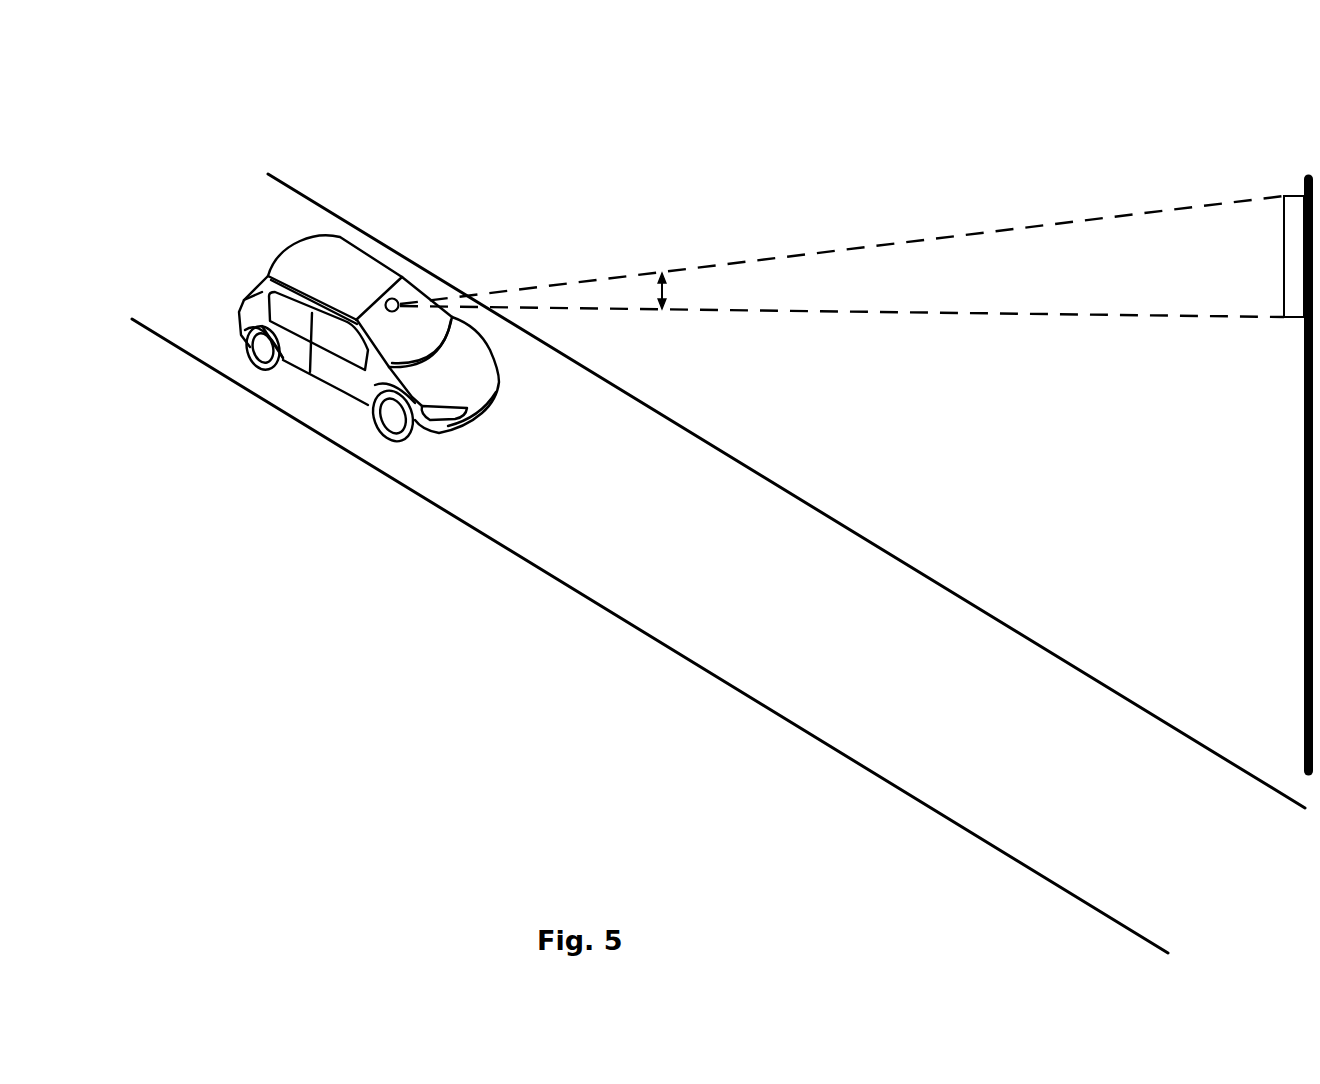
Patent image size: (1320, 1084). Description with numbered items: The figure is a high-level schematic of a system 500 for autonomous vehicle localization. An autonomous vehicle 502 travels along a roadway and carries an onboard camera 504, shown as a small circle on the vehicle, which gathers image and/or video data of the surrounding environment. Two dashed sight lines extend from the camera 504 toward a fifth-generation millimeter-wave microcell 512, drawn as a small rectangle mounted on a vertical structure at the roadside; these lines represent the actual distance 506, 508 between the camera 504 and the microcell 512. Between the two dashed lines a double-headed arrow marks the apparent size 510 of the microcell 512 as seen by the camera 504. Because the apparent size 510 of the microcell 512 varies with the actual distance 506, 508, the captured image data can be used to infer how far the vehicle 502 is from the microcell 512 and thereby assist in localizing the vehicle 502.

The system for autonomous vehicle localization 500 is at (136, 100).
The autonomous vehicle 502 is at (471, 386).
The onboard camera 504 is at (385, 301).
The actual distance 506 is at (824, 320).
The actual distance 508 is at (820, 247).
The apparent size 510 is at (668, 289).
The 5G millimeter-wave microcell 512 is at (1285, 251).